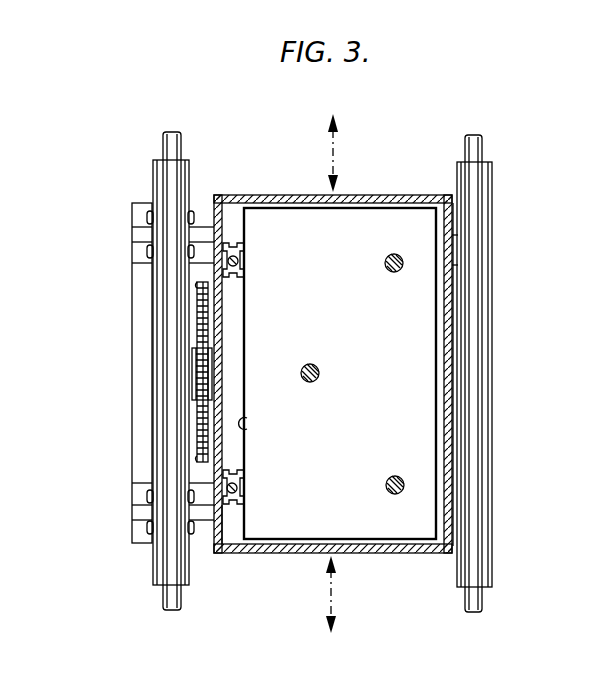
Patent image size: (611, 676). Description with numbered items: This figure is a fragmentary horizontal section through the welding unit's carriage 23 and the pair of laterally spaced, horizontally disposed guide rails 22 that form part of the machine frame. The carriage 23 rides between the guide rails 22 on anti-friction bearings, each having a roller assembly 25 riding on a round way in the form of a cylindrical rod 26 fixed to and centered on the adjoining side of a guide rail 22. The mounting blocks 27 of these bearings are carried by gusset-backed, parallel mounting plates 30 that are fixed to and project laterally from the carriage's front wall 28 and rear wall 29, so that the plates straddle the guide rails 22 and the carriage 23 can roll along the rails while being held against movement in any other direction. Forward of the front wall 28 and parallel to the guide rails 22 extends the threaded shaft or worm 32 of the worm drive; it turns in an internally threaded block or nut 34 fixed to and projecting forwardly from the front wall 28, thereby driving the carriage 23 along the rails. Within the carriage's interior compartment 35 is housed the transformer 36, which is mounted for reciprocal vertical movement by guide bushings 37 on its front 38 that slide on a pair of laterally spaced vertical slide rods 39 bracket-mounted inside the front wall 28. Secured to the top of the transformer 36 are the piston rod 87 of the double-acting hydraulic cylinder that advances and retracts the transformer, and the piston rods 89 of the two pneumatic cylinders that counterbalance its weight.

The guide rails 22 is at (157, 300).
The carriage 23 is at (380, 194).
The roller assembly 25 is at (152, 252).
The cylindrical rod 26 is at (167, 358).
The mounting blocks 27 is at (137, 233).
The front wall 28 is at (212, 235).
The rear wall 29 is at (450, 235).
The mounting plates 30 is at (131, 411).
The worm 32 is at (202, 312).
The nut 34 is at (202, 372).
The interior compartment 35 is at (230, 530).
The transformer 36 is at (364, 336).
The guide bushings 37 is at (235, 467).
The front 38 is at (246, 425).
The slide rods 39 is at (237, 488).
The piston rod 87 is at (312, 382).
The piston rods 89 is at (389, 256).